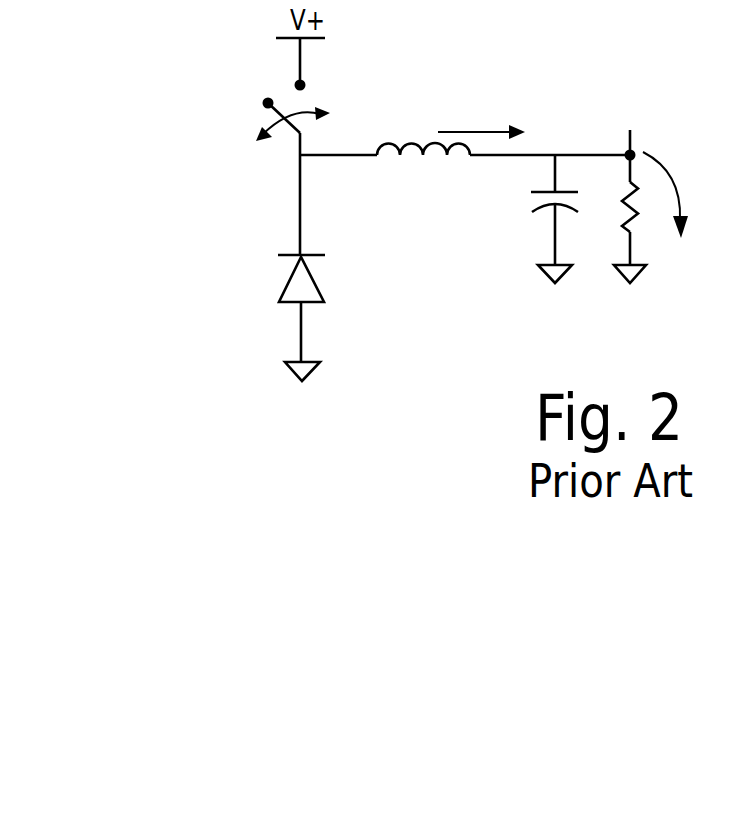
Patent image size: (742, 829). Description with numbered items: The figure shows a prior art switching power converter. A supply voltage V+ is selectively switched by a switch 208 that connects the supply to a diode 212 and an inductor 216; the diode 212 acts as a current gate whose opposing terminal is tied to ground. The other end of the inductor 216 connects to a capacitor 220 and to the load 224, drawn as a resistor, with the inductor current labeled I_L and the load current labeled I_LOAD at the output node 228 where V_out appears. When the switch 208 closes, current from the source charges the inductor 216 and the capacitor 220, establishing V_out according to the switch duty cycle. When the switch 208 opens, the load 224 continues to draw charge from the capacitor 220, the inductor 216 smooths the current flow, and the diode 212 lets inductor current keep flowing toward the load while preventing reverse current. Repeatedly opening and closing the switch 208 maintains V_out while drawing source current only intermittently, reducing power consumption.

The switch 208 is at (224, 165).
The diode 212 is at (288, 282).
The inductor 216 is at (433, 163).
The capacitor 220 is at (541, 208).
The load 224 is at (622, 215).
The output node 228 is at (640, 84).